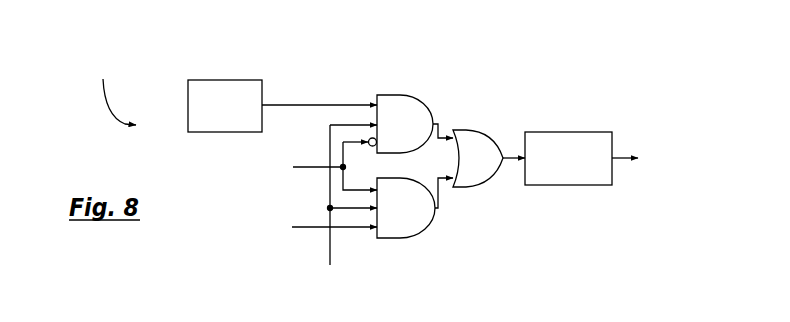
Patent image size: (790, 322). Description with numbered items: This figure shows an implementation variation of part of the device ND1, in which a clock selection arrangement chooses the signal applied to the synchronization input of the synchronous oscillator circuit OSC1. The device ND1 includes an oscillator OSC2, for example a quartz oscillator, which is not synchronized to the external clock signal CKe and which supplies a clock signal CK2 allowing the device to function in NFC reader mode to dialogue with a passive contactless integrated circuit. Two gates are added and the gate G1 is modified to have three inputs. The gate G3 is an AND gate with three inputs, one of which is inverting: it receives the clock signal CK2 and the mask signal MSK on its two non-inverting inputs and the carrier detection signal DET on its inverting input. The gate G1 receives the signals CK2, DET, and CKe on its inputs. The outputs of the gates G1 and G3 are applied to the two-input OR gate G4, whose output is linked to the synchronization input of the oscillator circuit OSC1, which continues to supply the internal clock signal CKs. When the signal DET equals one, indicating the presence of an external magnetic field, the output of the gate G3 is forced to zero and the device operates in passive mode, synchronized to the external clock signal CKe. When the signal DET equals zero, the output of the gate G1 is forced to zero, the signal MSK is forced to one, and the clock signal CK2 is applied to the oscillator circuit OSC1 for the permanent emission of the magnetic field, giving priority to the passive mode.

The device ND1 is at (113, 95).
The oscillator OSC2 is at (225, 106).
The clock signal CK2 is at (319, 98).
The AND gate G3 is at (391, 124).
The carrier detection signal DET is at (321, 166).
The mask signal MSK is at (347, 204).
The external clock signal CKe is at (319, 227).
The gate G1 is at (415, 208).
The OR gate G4 is at (489, 158).
The synchronous oscillator circuit OSC1 is at (568, 158).
The internal clock signal CKs is at (640, 158).